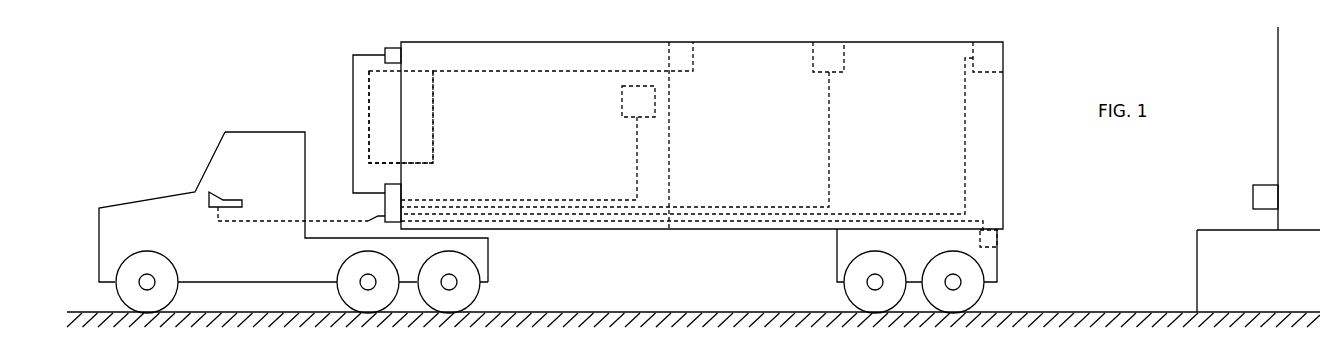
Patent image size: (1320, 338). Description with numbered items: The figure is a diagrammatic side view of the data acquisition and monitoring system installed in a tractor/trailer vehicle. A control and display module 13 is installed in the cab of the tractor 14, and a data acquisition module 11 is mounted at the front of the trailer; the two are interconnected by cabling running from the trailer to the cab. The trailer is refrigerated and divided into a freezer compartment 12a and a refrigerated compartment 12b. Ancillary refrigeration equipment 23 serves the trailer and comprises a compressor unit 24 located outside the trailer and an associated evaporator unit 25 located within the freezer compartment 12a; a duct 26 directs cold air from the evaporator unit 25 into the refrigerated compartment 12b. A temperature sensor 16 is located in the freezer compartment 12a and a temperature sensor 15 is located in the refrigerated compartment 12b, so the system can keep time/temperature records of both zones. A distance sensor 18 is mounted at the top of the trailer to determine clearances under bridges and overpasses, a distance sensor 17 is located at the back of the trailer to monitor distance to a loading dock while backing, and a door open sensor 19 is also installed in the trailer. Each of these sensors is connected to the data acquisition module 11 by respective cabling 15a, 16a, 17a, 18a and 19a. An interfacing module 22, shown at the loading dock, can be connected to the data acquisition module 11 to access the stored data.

The data acquisition module 11 is at (381, 203).
The freezer compartment 12a is at (535, 135).
The refrigerated compartment 12b is at (836, 177).
The control and display module 13 is at (297, 197).
The tractor 14 is at (293, 222).
The temperature sensor 15 is at (828, 57).
The cabling 15a is at (615, 139).
The temperature sensor 16 is at (638, 101).
The cabling 16a is at (519, 158).
The distance sensor 17 is at (1001, 241).
The cabling 17a is at (700, 217).
The distance sensor 18 is at (384, 46).
The cabling 18a is at (349, 122).
The door open sensor 19 is at (988, 57).
The cabling 19a is at (687, 136).
The interfacing module 22 is at (1260, 187).
The ancillary refrigeration equipment 23 is at (414, 117).
The compressor unit 24 is at (385, 117).
The evaporator unit 25 is at (417, 117).
The duct 26 is at (563, 56).